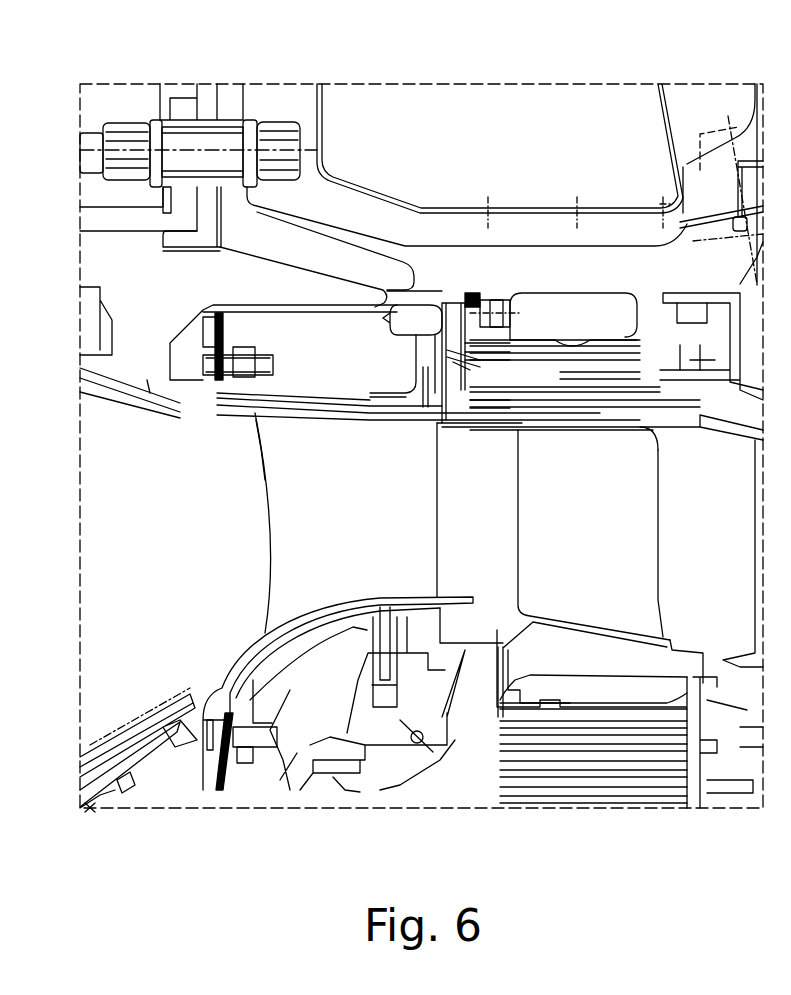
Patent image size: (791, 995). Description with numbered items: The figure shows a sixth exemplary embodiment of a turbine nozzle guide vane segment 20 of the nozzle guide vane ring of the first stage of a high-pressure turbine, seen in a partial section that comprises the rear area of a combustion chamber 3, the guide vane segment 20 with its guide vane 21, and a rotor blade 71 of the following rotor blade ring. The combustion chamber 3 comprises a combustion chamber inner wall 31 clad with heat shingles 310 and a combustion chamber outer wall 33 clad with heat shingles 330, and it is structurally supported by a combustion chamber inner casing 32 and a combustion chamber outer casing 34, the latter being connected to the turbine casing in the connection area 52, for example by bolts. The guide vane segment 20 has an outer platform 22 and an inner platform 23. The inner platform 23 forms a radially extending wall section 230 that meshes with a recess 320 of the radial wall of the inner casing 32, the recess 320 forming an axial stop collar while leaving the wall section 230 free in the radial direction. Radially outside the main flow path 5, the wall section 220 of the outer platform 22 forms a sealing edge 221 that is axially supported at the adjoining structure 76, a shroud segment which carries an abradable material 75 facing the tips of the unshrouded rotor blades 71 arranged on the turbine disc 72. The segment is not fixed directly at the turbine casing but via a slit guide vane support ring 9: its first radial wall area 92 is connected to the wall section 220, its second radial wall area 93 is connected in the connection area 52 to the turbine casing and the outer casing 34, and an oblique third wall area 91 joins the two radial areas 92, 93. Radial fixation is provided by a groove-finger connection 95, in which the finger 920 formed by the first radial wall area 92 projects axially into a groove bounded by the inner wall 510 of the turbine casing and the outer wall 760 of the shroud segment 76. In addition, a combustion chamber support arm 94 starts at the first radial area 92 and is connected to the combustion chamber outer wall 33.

The combustion chamber 3 is at (97, 557).
The main flow path 5 is at (553, 570).
The guide vane support ring 9 is at (226, 250).
The turbine nozzle guide vane segment 20 is at (266, 506).
The guide vane 21 is at (283, 538).
The outer platform 22 is at (218, 392).
The inner platform 23 is at (218, 690).
The combustion chamber inner wall 31 is at (95, 815).
The combustion chamber inner casing 32 is at (333, 723).
The combustion chamber outer wall 33 is at (198, 325).
The combustion chamber outer casing 34 is at (93, 220).
The connection area 52 is at (208, 146).
The rotor blade 71 is at (650, 556).
The turbine disc 72 is at (608, 810).
The abradable material 75 is at (703, 445).
The adjoining structure 76 is at (565, 292).
The third wall area 91 is at (262, 258).
The first radial wall area 92 is at (395, 340).
The second radial wall area 93 is at (180, 217).
The combustion chamber support arm 94 is at (295, 316).
The groove-finger connection 95 is at (515, 285).
The wall section 220 is at (402, 400).
The sealing edge 221 is at (426, 410).
The wall section 230 is at (373, 647).
The heat shingles 310 is at (120, 755).
The recess 320 is at (365, 700).
The heat shingles 330 is at (105, 398).
The inner wall of the turbine casing 510 is at (446, 270).
The outer wall of the adjoining structure 760 is at (493, 283).
The finger 920 is at (474, 290).